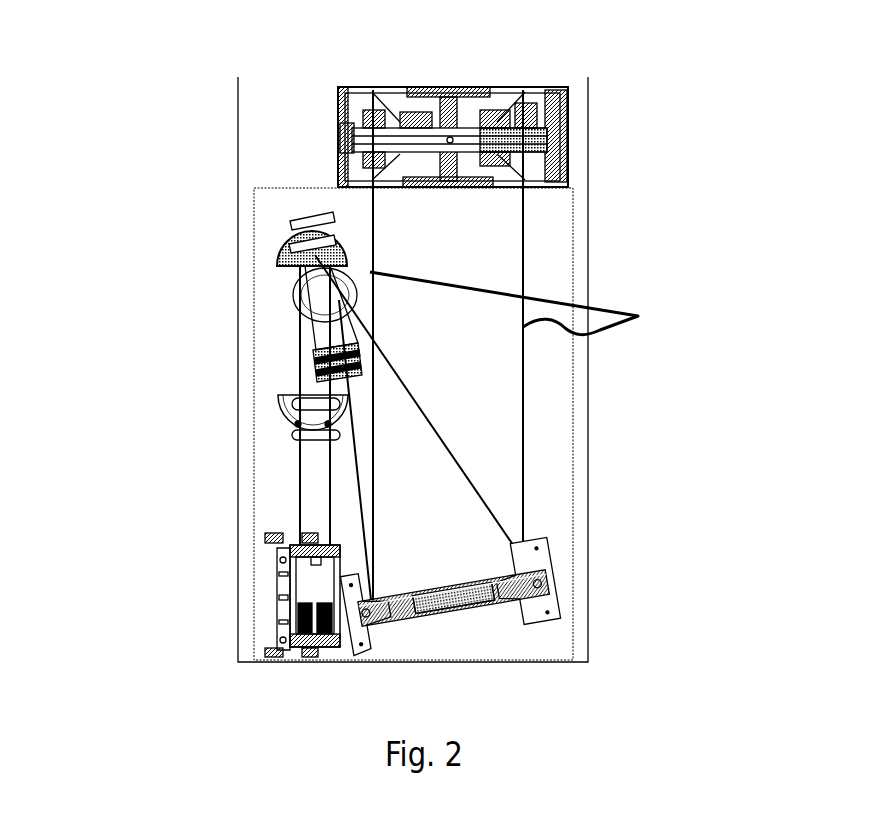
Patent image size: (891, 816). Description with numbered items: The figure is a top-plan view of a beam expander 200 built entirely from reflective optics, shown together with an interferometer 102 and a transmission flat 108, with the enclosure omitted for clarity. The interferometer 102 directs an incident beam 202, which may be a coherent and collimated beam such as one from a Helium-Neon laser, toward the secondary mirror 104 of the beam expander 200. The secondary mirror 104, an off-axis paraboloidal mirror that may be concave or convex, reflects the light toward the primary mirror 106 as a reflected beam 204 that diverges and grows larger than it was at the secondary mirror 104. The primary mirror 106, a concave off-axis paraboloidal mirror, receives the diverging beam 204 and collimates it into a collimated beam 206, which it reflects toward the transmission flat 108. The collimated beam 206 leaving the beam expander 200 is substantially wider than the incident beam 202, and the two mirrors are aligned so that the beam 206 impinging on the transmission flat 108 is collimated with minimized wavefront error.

The beam expander 200 is at (864, 60).
The interferometer 102 is at (273, 610).
The secondary mirror 104 is at (279, 263).
The primary mirror 106 is at (505, 612).
The transmission flat 108 is at (532, 176).
The incident beam 202 is at (300, 507).
The reflected beam 204 is at (363, 507).
The collimated beam 206 is at (538, 303).